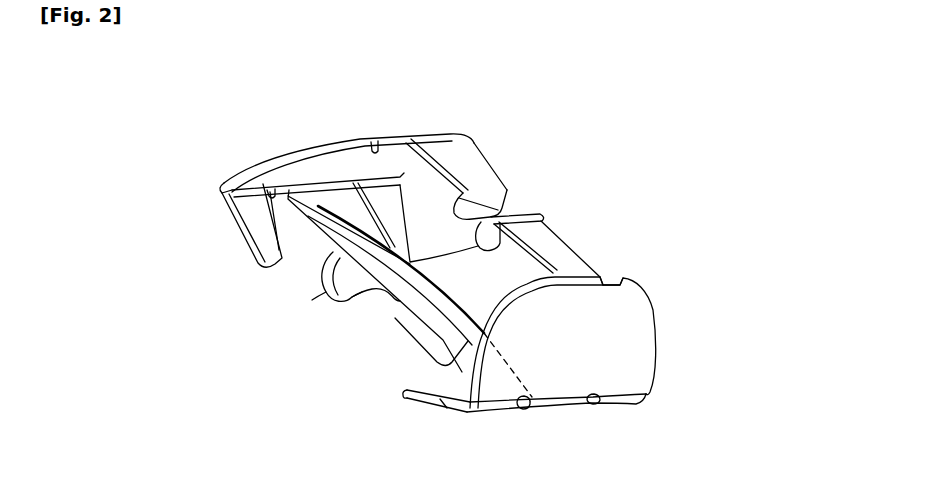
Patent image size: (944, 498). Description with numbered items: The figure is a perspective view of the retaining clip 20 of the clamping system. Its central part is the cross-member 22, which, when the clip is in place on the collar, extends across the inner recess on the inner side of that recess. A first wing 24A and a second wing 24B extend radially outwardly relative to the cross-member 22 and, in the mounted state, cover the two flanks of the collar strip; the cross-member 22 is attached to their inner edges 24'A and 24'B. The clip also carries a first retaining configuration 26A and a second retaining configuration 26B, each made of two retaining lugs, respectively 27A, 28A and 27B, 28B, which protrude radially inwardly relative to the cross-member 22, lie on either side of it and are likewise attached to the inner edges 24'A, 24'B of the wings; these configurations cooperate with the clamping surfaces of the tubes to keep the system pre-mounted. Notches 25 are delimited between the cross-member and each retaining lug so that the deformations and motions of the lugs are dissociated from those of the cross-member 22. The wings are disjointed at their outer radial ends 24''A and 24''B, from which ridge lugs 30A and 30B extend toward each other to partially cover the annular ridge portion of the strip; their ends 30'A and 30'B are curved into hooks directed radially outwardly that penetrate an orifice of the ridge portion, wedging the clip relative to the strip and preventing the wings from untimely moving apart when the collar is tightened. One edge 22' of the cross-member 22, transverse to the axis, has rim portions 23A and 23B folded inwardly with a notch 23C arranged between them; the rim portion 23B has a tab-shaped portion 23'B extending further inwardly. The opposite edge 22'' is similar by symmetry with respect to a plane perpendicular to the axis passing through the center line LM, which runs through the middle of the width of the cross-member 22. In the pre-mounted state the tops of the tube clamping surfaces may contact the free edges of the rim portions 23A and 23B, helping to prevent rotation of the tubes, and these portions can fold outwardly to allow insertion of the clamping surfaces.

The retaining clip 20 is at (676, 148).
The cross-member 22 is at (395, 270).
The edge of the cross-member 22' is at (375, 281).
The opposite edge of the cross-member 22'' is at (425, 301).
The rim portion 23A is at (424, 346).
The rim portion 23B is at (333, 257).
The tab-shaped portion 23'B is at (274, 312).
The notch 23C is at (390, 293).
The first wing 24A is at (641, 327).
The inner edge of the first wing 24'A is at (540, 428).
The outer radial end of the first wing 24''A is at (633, 259).
The second wing 24B is at (312, 148).
The inner edge of the second wing 24'B is at (255, 147).
The outer radial end of the second wing 24''B is at (390, 112).
The notch 25 is at (267, 240).
The first retaining configuration 26A is at (401, 411).
The second retaining configuration 26B is at (216, 202).
The retaining lug 27A is at (447, 408).
The retaining lug 27B is at (230, 206).
The retaining lug 28A is at (630, 411).
The retaining lug 28B is at (393, 216).
The ridge lug 30A is at (556, 235).
The hooked end of the ridge lug 30'A is at (456, 239).
The ridge lug 30B is at (473, 166).
The hooked end of the ridge lug 30'B is at (510, 191).
The center line LM is at (522, 402).